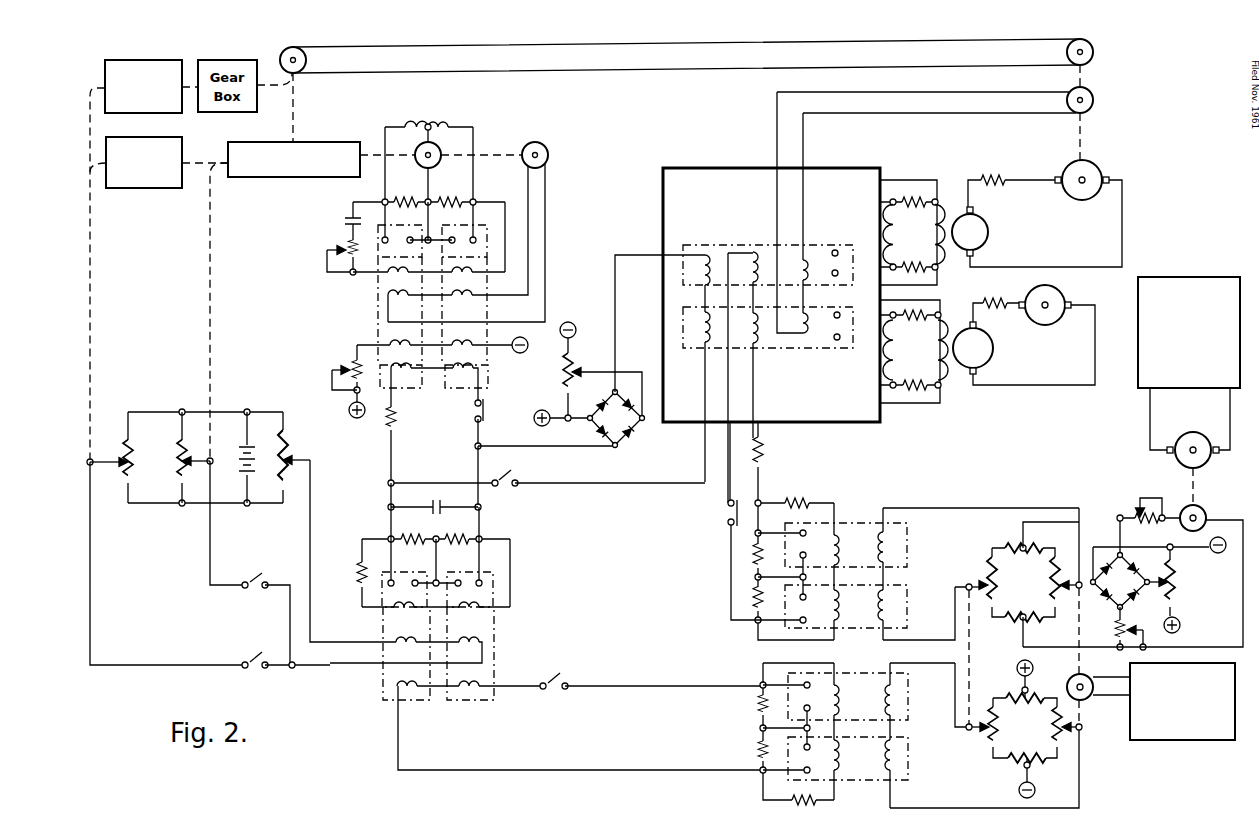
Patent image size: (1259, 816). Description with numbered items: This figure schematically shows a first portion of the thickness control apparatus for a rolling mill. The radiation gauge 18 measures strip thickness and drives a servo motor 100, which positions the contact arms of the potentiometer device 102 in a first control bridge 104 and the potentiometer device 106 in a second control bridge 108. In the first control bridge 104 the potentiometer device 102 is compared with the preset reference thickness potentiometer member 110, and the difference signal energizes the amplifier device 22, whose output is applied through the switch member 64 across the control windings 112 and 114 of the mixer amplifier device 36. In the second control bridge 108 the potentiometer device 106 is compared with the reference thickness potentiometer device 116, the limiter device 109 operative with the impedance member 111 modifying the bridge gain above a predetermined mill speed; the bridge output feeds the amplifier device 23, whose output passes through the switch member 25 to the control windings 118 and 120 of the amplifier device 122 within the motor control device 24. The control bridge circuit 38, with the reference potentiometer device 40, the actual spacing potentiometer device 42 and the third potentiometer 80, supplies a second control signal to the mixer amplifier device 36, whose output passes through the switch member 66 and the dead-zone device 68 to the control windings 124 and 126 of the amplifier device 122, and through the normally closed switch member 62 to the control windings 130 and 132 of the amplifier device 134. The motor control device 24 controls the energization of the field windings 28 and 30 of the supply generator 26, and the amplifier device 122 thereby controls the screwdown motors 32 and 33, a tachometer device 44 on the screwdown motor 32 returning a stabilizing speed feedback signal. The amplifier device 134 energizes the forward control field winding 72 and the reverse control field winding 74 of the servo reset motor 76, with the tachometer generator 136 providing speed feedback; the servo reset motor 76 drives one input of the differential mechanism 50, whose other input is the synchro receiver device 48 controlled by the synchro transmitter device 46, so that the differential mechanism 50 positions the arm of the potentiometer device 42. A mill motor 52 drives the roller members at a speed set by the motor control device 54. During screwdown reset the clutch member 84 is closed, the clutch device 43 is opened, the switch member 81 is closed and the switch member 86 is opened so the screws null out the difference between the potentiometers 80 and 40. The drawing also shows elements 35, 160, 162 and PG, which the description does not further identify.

The clutch member 84 is at (163, 60).
The clutch device 43 is at (182, 141).
The synchro receiver device 48 is at (284, 53).
The synchro transmitter device 46 is at (1093, 52).
The tachometer device 44 is at (1093, 100).
The differential mechanism 50 is at (250, 142).
The tachometer generator 136 is at (548, 148).
The reverse control field winding 74 is at (410, 128).
The forward control field winding 72 is at (448, 128).
The servo reset motor 76 is at (420, 160).
The amplifier device 134 is at (436, 243).
The control winding 130 is at (405, 380).
The control winding 132 is at (478, 370).
The normally closed switch member 62 is at (470, 410).
The switch member 64 is at (518, 491).
The control bridge circuit 38 is at (205, 447).
The third potentiometer 80 is at (136, 447).
The bridge reset potentiometer device 42 is at (174, 470).
The first reference potentiometer device 40 is at (295, 445).
The switch member 86 is at (254, 590).
The switch member 81 is at (270, 673).
The mixer amplifier device 36 is at (546, 626).
The control winding 112 is at (410, 692).
The control winding 114 is at (474, 694).
The switch member 66 is at (540, 695).
The dead-zone device 68 is at (627, 427).
The motor control device 24 is at (762, 164).
The control winding 124 is at (705, 255).
The control winding 126 is at (705, 345).
The control winding 118 is at (741, 254).
The control winding 120 is at (757, 345).
The amplifier device 122 is at (842, 237).
The field winding 28 is at (900, 234).
The field winding 30 is at (931, 238).
The supply generator 26 is at (985, 220).
The screwdown motor 32 is at (1096, 166).
The screwdown motor 33 is at (1055, 322).
The motor 35 is at (993, 343).
The transformer winding 160 is at (900, 352).
The transformer winding 162 is at (935, 356).
The motor control device 54 is at (1193, 277).
The mill motor 52 is at (1193, 430).
The pulse generator PG is at (1203, 510).
The switch member 25 is at (727, 507).
The amplifier device 23 is at (935, 574).
The amplifier device 22 is at (938, 736).
The reference thickness potentiometer device 116 is at (982, 577).
The potentiometer device 106 is at (1058, 572).
The second control bridge 108 is at (1015, 584).
The limiter device 109 is at (1132, 590).
The impedance member 111 is at (1115, 626).
The second potentiometer member 110 is at (987, 737).
The first control bridge 104 is at (1014, 729).
The servo motor 100 is at (1070, 684).
The potentiometer device 102 is at (1060, 733).
The radiation gauge 18 is at (1235, 667).